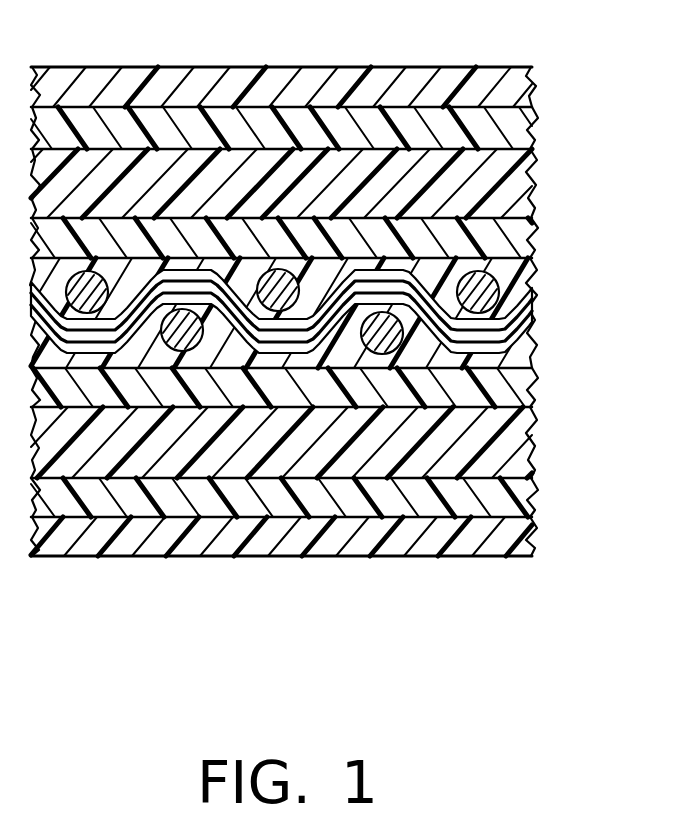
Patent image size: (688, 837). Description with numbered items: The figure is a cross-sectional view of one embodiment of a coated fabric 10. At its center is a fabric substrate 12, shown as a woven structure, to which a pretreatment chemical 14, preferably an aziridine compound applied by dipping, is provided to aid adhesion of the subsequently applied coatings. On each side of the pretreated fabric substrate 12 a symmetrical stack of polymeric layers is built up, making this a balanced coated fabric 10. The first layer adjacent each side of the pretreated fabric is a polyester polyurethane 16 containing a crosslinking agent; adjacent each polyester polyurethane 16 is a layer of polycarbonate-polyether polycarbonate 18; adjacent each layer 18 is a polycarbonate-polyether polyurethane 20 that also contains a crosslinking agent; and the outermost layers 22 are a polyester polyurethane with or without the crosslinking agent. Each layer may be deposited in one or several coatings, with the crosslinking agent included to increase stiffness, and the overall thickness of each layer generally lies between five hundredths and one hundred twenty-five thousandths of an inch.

The coated fabric 10 is at (556, 65).
The fabric substrate 12 is at (560, 315).
The pretreatment chemical 14 is at (505, 277).
The polyester polyurethane 16 is at (512, 240).
The polycarbonate-polyether polycarbonate 18 is at (510, 188).
The polycarbonate-polyether polyurethane 20 is at (507, 131).
The outermost layers 22 is at (510, 92).